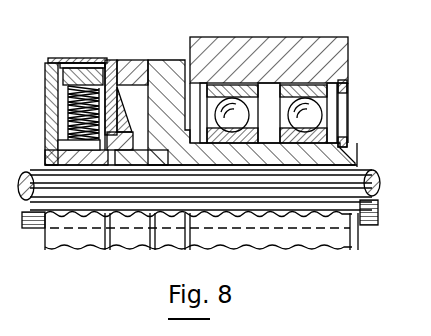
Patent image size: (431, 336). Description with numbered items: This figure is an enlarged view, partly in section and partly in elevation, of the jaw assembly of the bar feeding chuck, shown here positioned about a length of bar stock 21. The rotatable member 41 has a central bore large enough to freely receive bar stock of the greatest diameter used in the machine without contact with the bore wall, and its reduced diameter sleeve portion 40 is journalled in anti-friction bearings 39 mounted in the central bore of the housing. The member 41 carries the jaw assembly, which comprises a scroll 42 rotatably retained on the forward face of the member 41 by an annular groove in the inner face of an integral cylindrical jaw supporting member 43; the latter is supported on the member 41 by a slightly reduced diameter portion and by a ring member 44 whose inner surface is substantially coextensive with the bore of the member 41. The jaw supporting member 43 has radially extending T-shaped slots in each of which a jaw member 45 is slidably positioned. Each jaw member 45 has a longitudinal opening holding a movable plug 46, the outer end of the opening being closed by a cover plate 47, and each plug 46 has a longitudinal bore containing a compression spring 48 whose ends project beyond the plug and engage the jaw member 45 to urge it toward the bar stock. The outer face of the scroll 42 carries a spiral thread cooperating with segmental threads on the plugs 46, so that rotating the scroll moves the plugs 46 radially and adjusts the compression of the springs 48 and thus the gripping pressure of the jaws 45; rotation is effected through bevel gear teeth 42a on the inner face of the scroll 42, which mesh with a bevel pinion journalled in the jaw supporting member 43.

The shaft 21 is at (25, 172).
The anti-friction bearings 39 is at (300, 108).
The reduced diameter sleeve portion 40 is at (350, 146).
The rotatable member 41 is at (165, 62).
The scroll 42 is at (113, 78).
The bevel gear teeth 42a is at (133, 103).
The jaw supporting member 43 is at (138, 62).
The ring member 44 is at (140, 152).
The jaw member 45 is at (45, 123).
The movable plug 46 is at (65, 62).
The cover plate 47 is at (87, 60).
The compression spring 48 is at (68, 107).